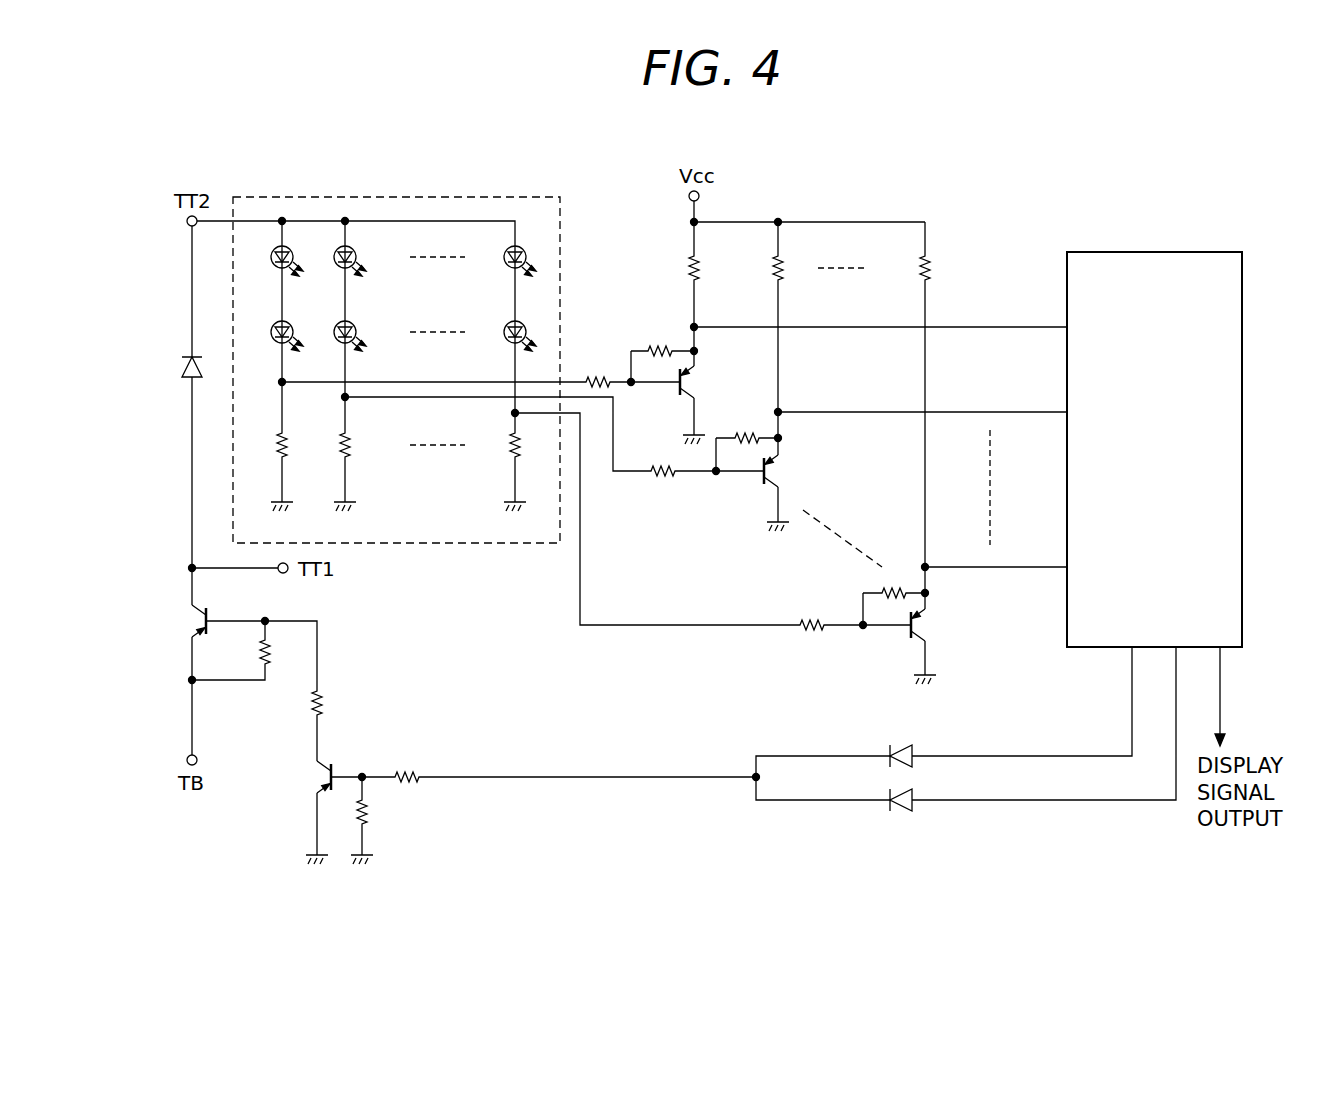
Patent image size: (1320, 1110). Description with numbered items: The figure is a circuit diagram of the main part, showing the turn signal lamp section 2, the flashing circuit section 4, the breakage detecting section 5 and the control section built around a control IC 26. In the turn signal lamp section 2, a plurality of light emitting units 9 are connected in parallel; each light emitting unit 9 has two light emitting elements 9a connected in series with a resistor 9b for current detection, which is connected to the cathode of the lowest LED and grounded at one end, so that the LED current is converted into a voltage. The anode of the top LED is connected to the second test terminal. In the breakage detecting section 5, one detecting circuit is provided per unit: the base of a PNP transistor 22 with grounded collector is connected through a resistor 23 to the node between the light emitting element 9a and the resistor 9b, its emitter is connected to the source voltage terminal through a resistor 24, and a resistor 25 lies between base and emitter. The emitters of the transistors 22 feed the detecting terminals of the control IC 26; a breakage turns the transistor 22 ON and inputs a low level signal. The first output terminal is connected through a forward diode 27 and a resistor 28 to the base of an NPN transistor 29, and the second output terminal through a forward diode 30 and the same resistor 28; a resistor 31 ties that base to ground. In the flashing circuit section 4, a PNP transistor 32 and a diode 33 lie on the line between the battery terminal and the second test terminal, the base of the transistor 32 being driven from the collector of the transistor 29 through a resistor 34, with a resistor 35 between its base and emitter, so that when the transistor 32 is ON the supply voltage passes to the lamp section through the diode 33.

The turn signal lamp section 2 is at (528, 196).
The flashing circuit section 4 is at (427, 692).
The breakage detecting section 5 is at (850, 196).
The light emitting unit 9 is at (262, 206).
The light emitting element 9a is at (343, 193).
The resistor for current detection 9b is at (285, 438).
The PNP transistor 22 is at (697, 385).
The resistor 23 is at (598, 372).
The resistor 24 is at (699, 270).
The resistor 25 is at (661, 343).
The control IC 26 is at (1180, 252).
The forward diode 27 is at (893, 747).
The resistor 28 is at (408, 770).
The NPN transistor 29 is at (322, 777).
The forward diode 30 is at (893, 813).
The resistor 31 is at (368, 808).
The PNP transistor 32 is at (190, 616).
The diode 33 is at (195, 380).
The resistor 34 is at (314, 700).
The resistor 35 is at (262, 650).